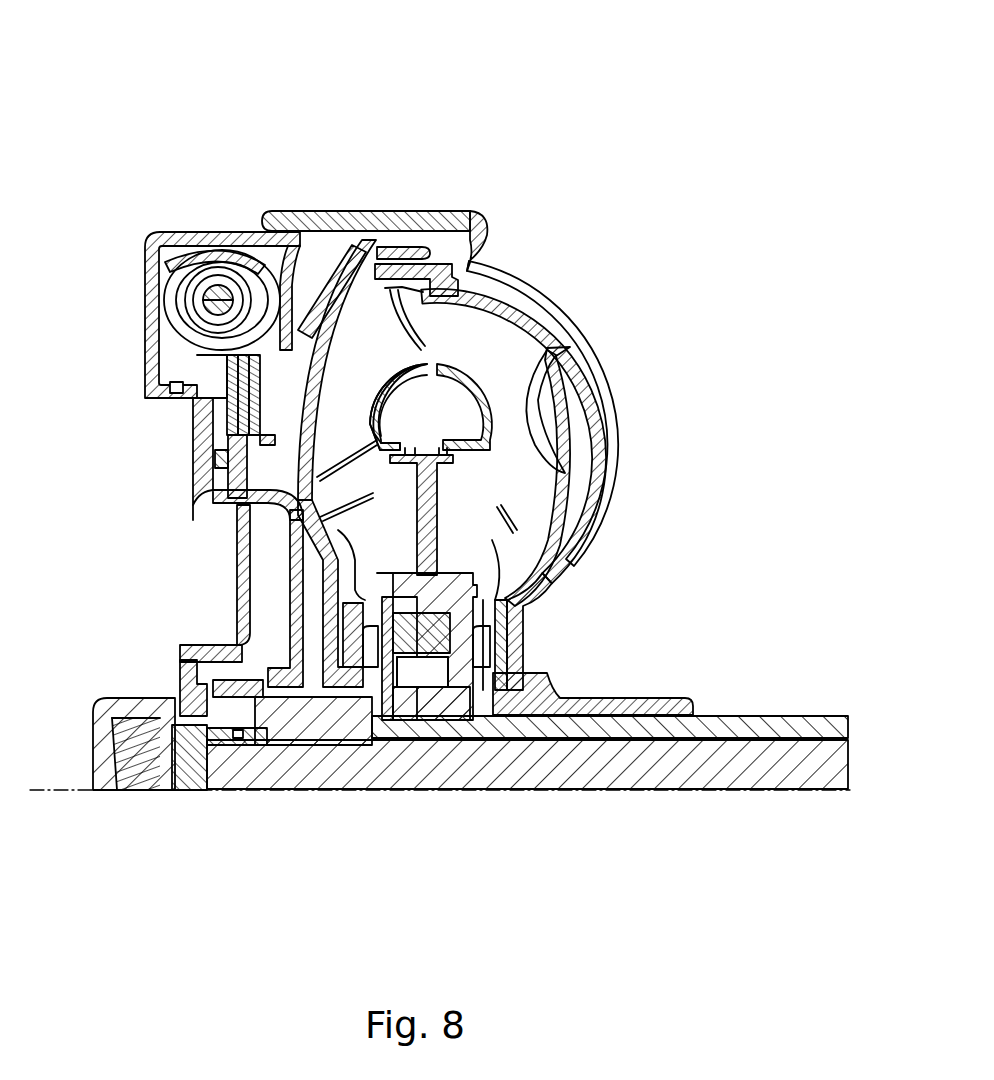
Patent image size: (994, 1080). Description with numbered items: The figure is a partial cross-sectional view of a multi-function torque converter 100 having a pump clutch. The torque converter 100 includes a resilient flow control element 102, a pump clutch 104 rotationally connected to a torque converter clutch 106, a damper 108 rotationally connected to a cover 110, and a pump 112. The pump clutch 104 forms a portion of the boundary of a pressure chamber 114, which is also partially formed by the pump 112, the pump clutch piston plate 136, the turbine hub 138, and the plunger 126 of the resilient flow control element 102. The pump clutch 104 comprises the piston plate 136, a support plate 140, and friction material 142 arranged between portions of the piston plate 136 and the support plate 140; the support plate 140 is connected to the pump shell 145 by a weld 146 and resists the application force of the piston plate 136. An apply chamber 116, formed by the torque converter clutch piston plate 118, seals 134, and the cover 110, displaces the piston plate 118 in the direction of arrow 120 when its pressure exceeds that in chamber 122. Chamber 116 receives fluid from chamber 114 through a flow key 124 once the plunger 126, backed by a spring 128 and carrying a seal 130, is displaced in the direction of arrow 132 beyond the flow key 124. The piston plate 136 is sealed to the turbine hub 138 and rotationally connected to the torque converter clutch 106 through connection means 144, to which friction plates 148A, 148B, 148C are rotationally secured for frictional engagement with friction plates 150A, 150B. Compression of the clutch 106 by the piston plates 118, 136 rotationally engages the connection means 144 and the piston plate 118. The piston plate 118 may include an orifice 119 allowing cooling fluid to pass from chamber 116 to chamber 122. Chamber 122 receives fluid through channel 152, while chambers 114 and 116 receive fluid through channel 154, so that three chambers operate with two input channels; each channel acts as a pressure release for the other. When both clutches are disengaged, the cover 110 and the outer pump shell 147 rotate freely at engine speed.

The multi-function torque converter 100 is at (170, 74).
The resilient flow control element 102 is at (128, 765).
The pump clutch 104 is at (320, 268).
The torque converter clutch 106 is at (203, 372).
The damper 108 is at (162, 259).
The cover 110 is at (237, 578).
The pump 112 is at (555, 550).
The pressure chamber 114 is at (487, 327).
The apply chamber 116 is at (270, 627).
The torque converter clutch piston plate 118 is at (195, 525).
The orifice 119 is at (226, 442).
The arrow 120 is at (510, 822).
The chamber 122 is at (362, 238).
The flow key 124 is at (207, 712).
The plunger 126 is at (178, 788).
The spring 128 is at (143, 777).
The seal 130 is at (240, 745).
The arrow 132 is at (592, 822).
The seals 134 is at (268, 675).
The pump clutch piston plate 136 is at (290, 462).
The turbine hub 138 is at (366, 718).
The support plate 140 is at (443, 215).
The friction material 142 is at (338, 268).
The connection means 144 is at (268, 252).
The pump shell 145 is at (543, 343).
The weld 146 is at (432, 252).
The outer pump shell 147 is at (614, 445).
The friction plate 148A is at (237, 362).
The friction plate 148B is at (247, 368).
The friction plate 148C is at (257, 372).
The friction plate 150A is at (228, 420).
The friction plate 150B is at (225, 462).
The channel 152 is at (553, 685).
The channel 154 is at (707, 740).